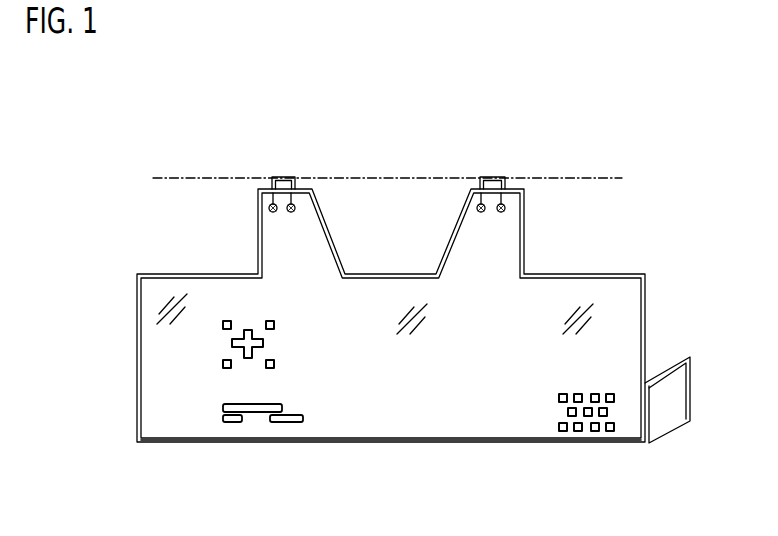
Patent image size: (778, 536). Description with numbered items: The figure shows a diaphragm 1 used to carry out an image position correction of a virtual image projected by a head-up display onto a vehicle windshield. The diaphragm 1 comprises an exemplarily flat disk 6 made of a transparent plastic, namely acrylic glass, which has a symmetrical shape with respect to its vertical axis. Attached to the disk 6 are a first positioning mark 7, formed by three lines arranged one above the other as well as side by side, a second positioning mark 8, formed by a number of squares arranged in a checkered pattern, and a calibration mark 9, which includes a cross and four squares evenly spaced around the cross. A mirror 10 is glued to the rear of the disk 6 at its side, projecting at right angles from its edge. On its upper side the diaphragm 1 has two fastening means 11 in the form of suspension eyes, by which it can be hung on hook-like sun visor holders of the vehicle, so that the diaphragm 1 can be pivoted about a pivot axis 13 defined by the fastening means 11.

The diaphragm 1 is at (641, 237).
The disk 6 is at (407, 443).
The first positioning mark 7 is at (251, 424).
The second positioning mark 8 is at (576, 444).
The calibration mark 9 is at (286, 330).
The mirror 10 is at (668, 420).
The fastening means 11 is at (281, 175).
The pivot axis 13 is at (201, 177).